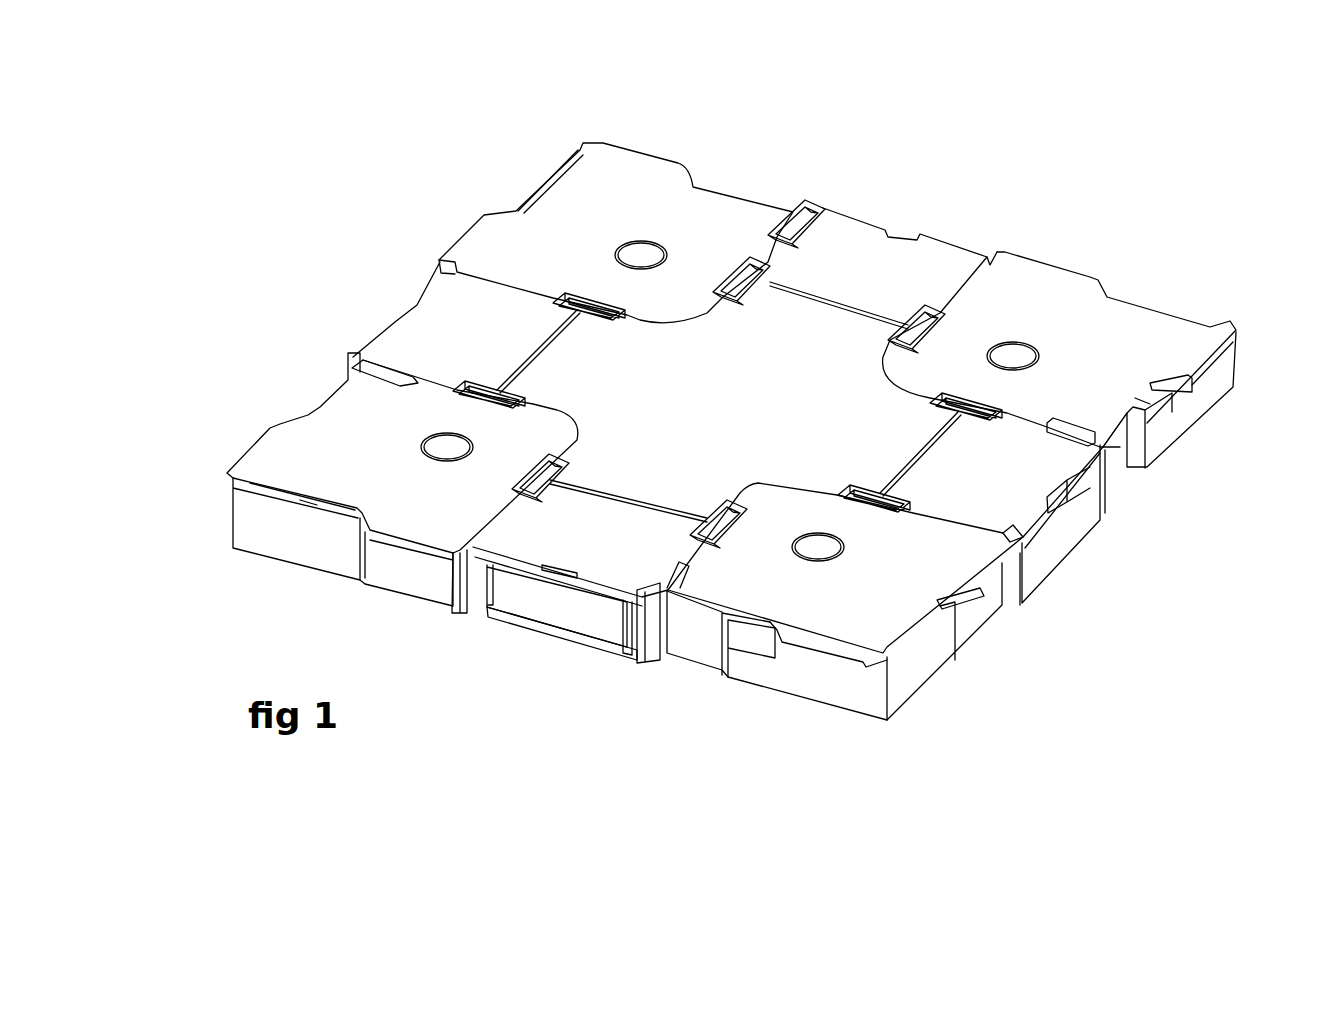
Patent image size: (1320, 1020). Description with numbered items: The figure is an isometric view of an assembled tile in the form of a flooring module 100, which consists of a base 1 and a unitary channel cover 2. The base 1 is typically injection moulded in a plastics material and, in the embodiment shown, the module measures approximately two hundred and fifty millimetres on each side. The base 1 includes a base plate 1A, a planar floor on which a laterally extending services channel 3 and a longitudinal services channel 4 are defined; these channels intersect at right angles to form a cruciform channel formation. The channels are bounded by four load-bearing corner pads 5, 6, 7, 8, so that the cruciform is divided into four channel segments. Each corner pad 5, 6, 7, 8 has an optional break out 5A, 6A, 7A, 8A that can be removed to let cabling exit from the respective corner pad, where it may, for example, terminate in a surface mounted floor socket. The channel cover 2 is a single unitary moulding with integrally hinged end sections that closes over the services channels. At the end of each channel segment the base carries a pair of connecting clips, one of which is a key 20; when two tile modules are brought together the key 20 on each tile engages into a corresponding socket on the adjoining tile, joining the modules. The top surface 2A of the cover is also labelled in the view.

The flooring module 100 is at (890, 215).
The unitary channel cover 2 is at (827, 352).
The top surface of base plate 2A is at (709, 400).
The load-bearing corner pad 5 is at (607, 155).
The break out 5A is at (639, 255).
The load-bearing corner pad 6 is at (1043, 290).
The break out 6A is at (1018, 357).
The load-bearing corner pad 7 is at (868, 582).
The break out 7A is at (815, 547).
The load-bearing corner pad 8 is at (418, 492).
The break out 8A is at (437, 447).
The base 1 is at (287, 528).
The base plate 1A is at (563, 610).
The laterally extending services channel 3 is at (528, 607).
The longitudinal services channel 4 is at (1033, 542).
The key 20 is at (647, 653).